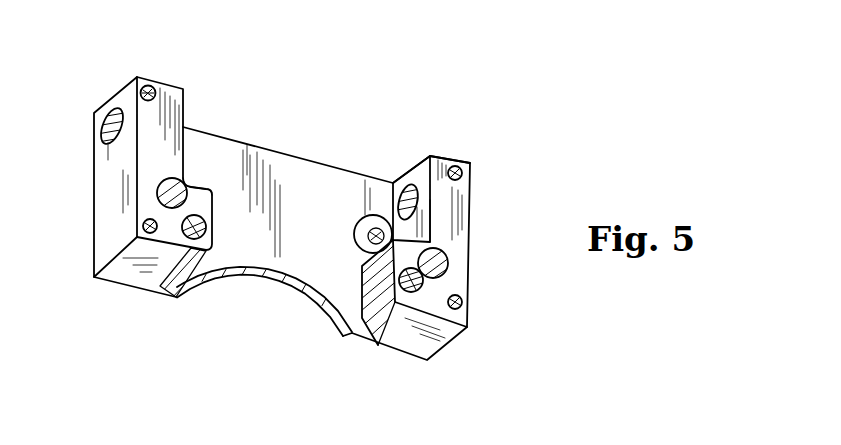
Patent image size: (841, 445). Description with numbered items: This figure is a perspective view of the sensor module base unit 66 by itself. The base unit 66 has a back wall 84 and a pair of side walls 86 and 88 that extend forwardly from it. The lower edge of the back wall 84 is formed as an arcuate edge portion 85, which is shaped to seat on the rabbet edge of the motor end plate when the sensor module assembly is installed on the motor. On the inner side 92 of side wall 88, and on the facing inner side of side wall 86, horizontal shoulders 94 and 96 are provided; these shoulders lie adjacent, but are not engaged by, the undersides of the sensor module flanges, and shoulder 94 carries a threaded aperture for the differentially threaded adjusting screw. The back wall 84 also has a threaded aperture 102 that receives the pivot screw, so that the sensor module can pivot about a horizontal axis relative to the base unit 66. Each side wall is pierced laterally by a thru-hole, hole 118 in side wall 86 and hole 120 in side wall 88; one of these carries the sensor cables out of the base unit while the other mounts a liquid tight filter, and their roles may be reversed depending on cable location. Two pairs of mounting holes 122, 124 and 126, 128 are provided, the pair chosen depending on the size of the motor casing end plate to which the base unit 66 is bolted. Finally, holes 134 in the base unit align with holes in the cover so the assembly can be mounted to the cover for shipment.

The sensor module base unit 66 is at (312, 134).
The back wall 84 is at (338, 180).
The arcuate edge portion 85 is at (288, 290).
The side wall 86 is at (108, 203).
The side wall 88 is at (452, 215).
The inner side 92 is at (419, 167).
The horizontal shoulder 94 is at (201, 189).
The horizontal shoulder 96 is at (416, 234).
The threaded aperture 102 is at (355, 241).
The thru-hole 118 is at (111, 108).
The thru-hole 120 is at (407, 182).
The mounting hole 122 is at (208, 228).
The mounting hole 124 is at (398, 279).
The mounting hole 126 is at (157, 196).
The mounting hole 128 is at (446, 257).
The holes 134 is at (145, 85).